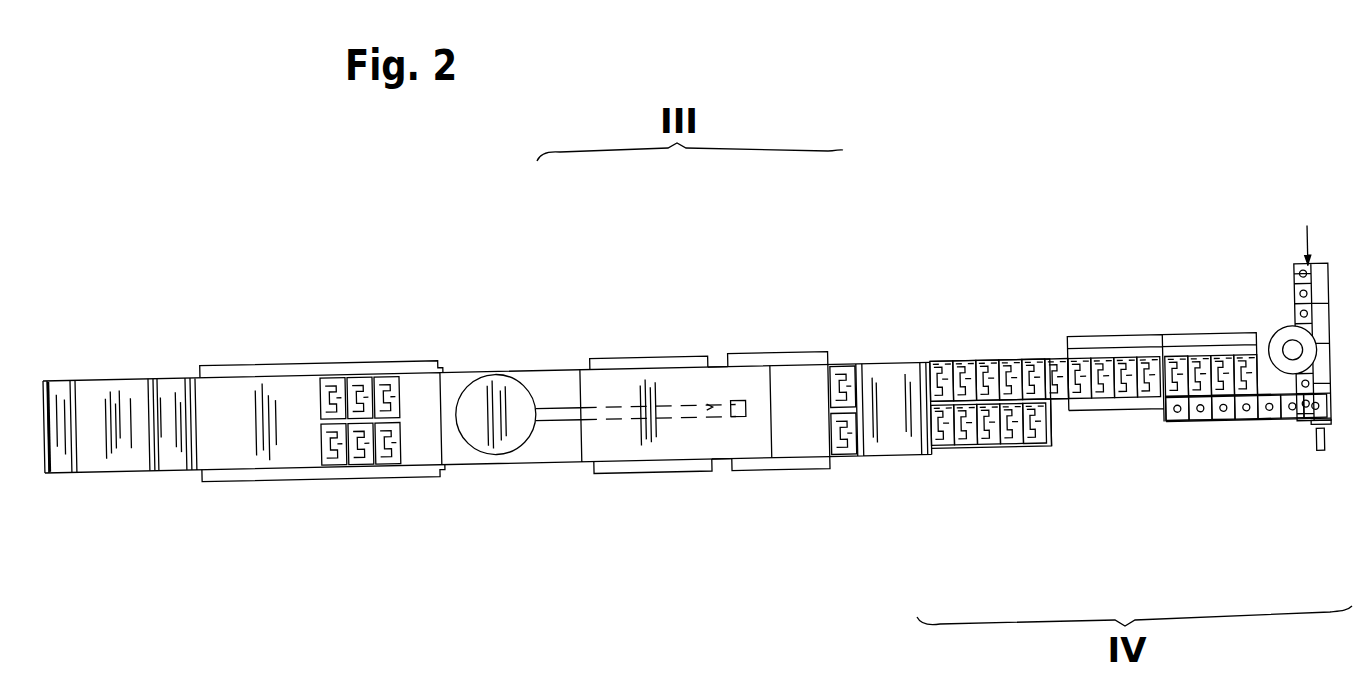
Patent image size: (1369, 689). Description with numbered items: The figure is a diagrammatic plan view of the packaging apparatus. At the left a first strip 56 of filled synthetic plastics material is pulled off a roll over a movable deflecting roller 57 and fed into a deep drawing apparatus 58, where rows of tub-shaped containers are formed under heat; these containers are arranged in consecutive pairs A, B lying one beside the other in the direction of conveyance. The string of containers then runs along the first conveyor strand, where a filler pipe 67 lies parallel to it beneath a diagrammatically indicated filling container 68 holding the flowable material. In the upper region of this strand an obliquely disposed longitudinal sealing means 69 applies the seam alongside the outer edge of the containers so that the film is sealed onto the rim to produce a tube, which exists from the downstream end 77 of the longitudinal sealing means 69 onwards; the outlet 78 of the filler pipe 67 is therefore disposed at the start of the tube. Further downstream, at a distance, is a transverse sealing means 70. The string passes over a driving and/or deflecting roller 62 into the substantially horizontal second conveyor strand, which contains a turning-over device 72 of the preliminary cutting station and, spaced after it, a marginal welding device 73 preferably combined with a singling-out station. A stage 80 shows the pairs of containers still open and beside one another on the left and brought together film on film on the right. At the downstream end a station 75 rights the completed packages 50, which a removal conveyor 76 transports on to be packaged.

The completed packages 50 is at (1186, 357).
The first strip 56 is at (118, 455).
The movable deflecting roller 57 is at (53, 410).
The deep drawing apparatus 58 is at (272, 372).
The driving and/or deflecting roller 62 is at (908, 366).
The filler pipe 67 is at (555, 424).
The filling container 68 is at (494, 442).
The longitudinal sealing means 69 is at (633, 363).
The transverse sealing means 70 is at (789, 358).
The turning-over device 72 is at (992, 357).
The marginal welding device 73 is at (1100, 338).
The righting station 75 is at (1220, 427).
The removal conveyor 76 is at (1294, 268).
The downstream end of the longitudinal sealing means 77 is at (711, 363).
The outlet of the filler pipe 78 is at (742, 418).
The stage 80 is at (1051, 433).
The pair of containers A is at (357, 371).
The pair of containers B is at (385, 371).